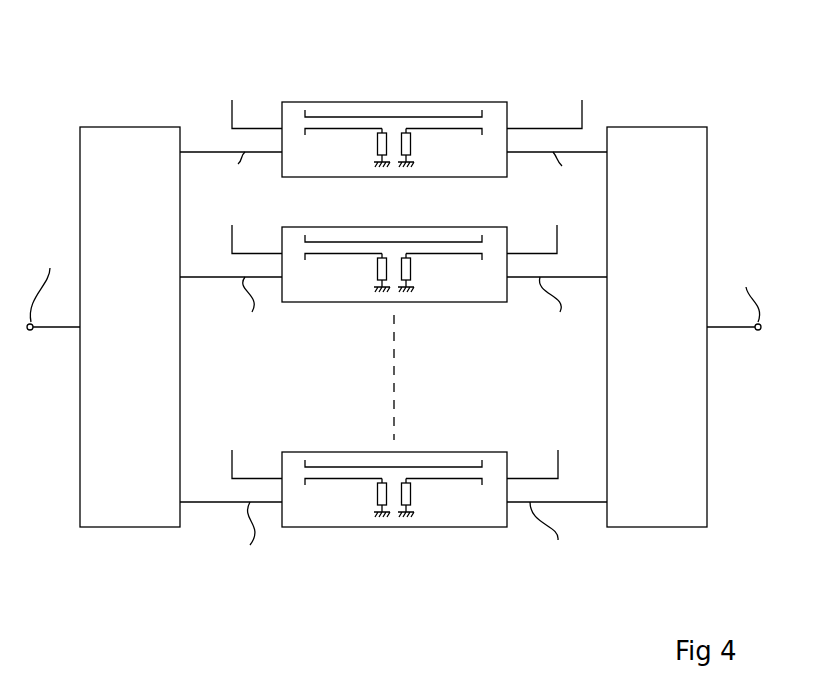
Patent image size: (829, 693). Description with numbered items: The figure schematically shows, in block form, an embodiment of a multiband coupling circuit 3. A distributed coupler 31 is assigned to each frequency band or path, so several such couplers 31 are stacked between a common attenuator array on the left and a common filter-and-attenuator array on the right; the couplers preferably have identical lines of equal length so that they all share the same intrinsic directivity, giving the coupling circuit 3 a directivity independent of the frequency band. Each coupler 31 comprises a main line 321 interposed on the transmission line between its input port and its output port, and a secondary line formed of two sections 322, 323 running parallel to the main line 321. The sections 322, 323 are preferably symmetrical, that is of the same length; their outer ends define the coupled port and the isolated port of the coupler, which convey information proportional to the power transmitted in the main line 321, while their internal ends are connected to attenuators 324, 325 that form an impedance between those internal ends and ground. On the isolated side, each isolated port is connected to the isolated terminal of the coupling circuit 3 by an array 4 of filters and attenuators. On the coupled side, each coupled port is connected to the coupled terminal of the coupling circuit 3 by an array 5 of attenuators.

The coupling circuit 3 is at (152, 82).
The array of filters and attenuators 4 is at (660, 127).
The array of attenuators 5 is at (120, 528).
The distributed coupler 31 is at (465, 102).
The main line 321 is at (385, 117).
The secondary line section 322 is at (335, 130).
The secondary line section 323 is at (447, 130).
The attenuator 324 is at (374, 146).
The attenuator 325 is at (414, 146).